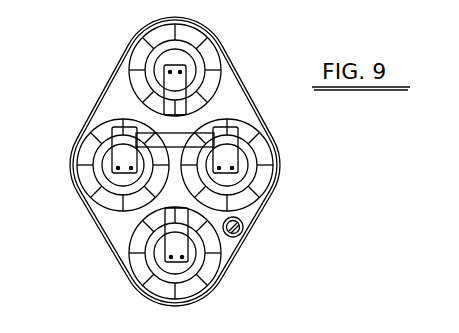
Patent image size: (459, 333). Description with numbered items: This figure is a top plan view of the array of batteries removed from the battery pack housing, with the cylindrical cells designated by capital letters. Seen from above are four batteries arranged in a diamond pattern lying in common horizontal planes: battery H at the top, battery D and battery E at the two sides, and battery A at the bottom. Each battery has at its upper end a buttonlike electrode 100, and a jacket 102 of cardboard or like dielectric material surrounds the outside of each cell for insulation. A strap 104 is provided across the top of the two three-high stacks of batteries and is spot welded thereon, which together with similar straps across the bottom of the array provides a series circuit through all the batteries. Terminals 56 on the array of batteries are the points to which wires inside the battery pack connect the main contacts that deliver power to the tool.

The upper end buttonlike electrode 100 is at (188, 70).
The jacket 102 is at (160, 33).
The strap 104 is at (162, 140).
The terminals 56 is at (172, 85).
The battery H is at (205, 42).
The battery D is at (265, 130).
The battery A is at (208, 275).
The battery E is at (93, 143).